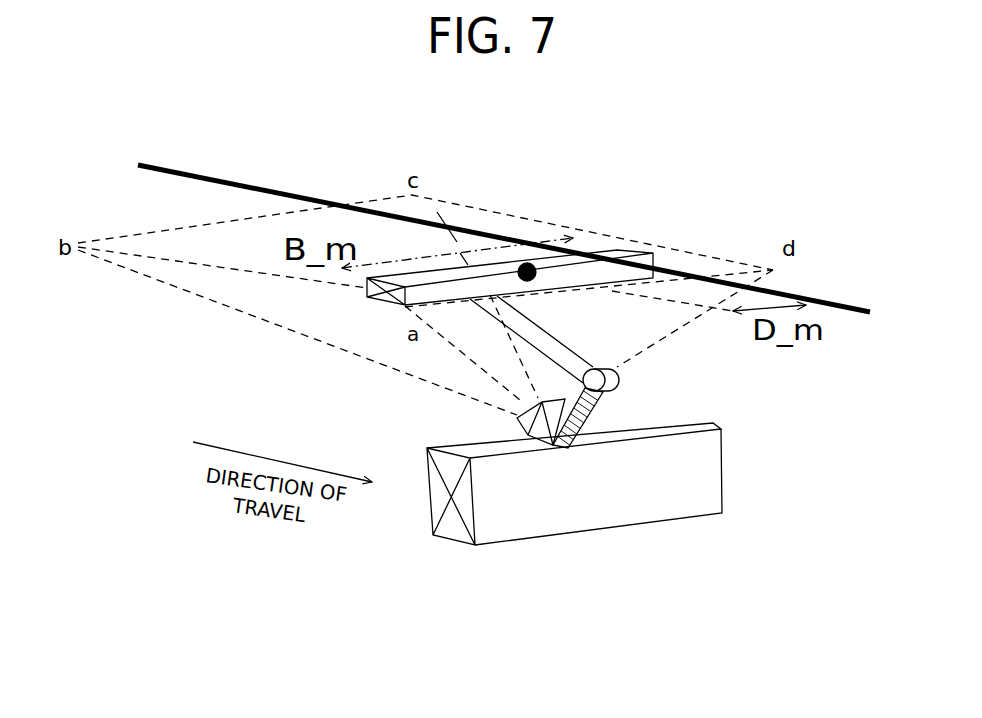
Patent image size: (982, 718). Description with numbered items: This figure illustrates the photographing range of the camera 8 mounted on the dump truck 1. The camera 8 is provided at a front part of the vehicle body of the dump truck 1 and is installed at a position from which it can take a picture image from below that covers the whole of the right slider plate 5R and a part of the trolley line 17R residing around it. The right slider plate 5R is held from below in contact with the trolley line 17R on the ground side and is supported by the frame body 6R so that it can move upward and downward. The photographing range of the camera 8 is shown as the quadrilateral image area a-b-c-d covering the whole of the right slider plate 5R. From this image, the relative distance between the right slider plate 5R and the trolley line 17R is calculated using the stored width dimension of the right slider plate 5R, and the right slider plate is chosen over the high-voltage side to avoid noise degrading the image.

The trolley line 17R is at (232, 182).
The right slider plate 5R is at (403, 303).
The frame body 6R is at (552, 352).
The camera 8 is at (517, 418).
The dump truck 1 is at (663, 422).